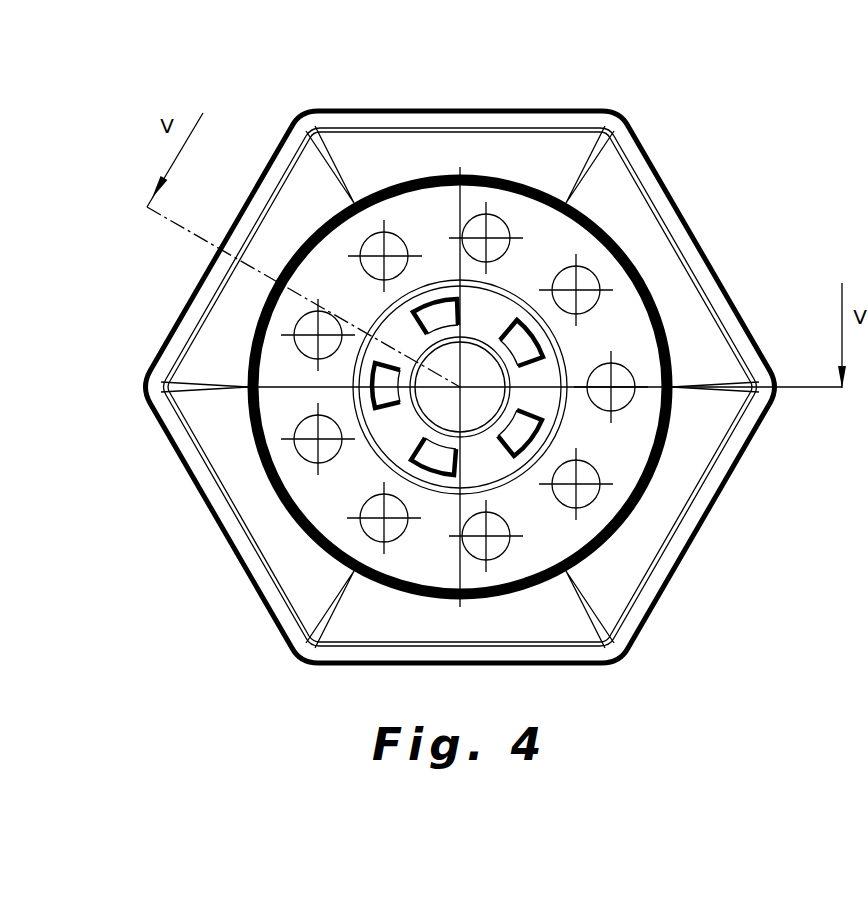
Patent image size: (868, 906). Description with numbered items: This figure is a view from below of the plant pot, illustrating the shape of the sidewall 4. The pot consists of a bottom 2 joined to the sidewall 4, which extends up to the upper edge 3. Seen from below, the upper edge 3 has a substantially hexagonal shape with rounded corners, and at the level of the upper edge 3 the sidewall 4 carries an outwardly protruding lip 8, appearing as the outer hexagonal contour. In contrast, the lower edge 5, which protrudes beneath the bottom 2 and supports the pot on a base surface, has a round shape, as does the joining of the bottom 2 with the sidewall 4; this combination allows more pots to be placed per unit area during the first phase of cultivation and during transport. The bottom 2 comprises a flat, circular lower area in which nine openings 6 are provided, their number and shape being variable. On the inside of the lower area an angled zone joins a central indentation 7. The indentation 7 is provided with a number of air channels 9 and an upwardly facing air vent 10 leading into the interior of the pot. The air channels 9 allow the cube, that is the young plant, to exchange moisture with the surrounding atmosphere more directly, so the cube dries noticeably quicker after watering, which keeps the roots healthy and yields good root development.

The bottom 2 is at (612, 448).
The upper edge 3 is at (698, 272).
The sidewall 4 is at (230, 306).
The lower edge 5 is at (622, 528).
The openings 6 is at (585, 285).
The central indentation 7 is at (487, 322).
The lip 8 is at (155, 388).
The air channels 9 is at (435, 315).
The air vent 10 is at (403, 437).